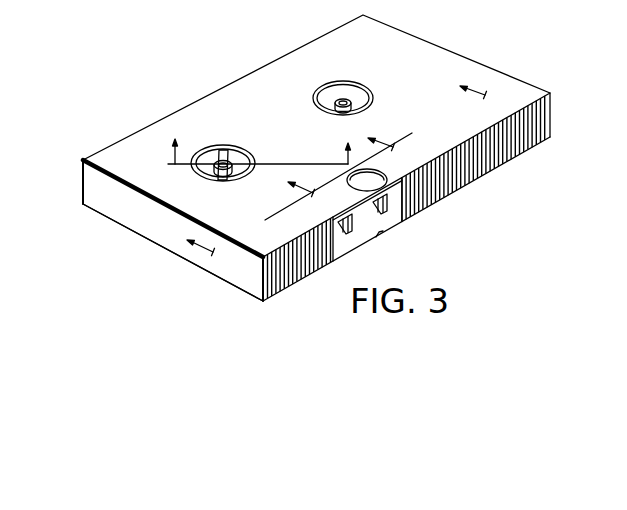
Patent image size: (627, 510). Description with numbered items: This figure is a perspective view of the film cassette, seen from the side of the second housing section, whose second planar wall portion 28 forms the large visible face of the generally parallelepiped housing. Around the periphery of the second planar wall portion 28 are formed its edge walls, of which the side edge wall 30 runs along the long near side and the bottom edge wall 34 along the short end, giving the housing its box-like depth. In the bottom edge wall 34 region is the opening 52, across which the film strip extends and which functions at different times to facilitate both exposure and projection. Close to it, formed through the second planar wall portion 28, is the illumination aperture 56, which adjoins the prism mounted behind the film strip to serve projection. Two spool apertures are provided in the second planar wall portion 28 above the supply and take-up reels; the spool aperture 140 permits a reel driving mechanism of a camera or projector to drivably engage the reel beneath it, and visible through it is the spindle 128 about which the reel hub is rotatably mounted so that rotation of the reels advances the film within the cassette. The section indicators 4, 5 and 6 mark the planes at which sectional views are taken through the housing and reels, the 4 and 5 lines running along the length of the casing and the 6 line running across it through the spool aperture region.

The second planar wall portion 28 is at (523, 93).
The side edge wall 30 is at (227, 268).
The bottom edge wall 34 is at (540, 133).
The opening 52 is at (381, 232).
The illumination aperture 56 is at (372, 182).
The spindle 128 is at (342, 99).
The spool aperture 140 is at (364, 98).
The section line 4- 4 is at (329, 163).
The section line 5- 5 is at (338, 169).
The section line 6- 6 is at (258, 141).